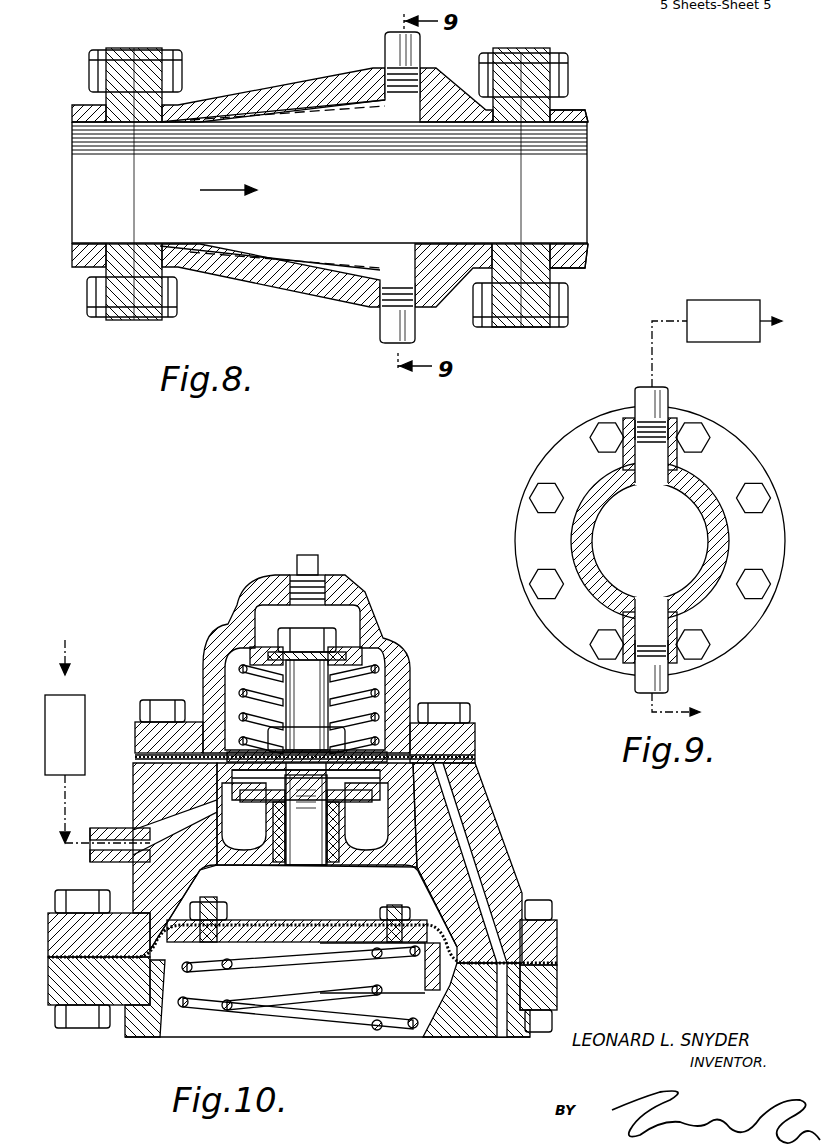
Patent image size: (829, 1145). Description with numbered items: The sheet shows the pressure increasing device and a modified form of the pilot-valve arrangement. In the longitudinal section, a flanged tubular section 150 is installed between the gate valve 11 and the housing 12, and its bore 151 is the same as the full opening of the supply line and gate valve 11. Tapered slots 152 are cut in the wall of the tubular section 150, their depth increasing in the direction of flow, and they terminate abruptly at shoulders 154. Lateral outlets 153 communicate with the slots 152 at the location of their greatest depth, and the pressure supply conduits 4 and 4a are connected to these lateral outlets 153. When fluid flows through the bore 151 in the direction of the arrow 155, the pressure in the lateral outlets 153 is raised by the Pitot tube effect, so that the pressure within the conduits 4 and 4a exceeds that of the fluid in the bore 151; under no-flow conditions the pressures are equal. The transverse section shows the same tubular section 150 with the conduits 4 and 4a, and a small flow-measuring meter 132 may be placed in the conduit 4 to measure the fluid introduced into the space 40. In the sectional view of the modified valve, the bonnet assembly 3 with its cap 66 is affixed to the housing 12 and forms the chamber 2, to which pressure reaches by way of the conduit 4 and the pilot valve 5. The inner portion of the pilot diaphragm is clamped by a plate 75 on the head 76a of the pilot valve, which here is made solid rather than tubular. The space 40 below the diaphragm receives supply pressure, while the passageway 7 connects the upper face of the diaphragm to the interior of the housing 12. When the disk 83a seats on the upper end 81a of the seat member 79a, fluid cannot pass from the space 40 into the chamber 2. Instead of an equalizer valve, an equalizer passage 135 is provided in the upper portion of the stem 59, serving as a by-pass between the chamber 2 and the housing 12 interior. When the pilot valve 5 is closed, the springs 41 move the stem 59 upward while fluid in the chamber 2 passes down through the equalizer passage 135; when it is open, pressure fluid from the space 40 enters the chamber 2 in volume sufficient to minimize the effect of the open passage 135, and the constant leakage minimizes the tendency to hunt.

In FIG. 10, the chamber 2 is at (420, 885).
In FIG. 10, the bonnet assembly 3 is at (500, 841).
In FIG. 8, the pressure supply conduit 4 is at (385, 49).
In FIG. 9, the pressure supply conduit 4 is at (652, 358).
In FIG. 10, the pressure supply conduit 4 is at (107, 828).
In FIG. 8, the pressure supply conduit 4a is at (380, 330).
In FIG. 9, the pressure supply conduit 4a is at (650, 684).
In FIG. 10, the pilot valve 5 is at (342, 790).
In FIG. 10, the passageway 7 is at (487, 900).
In FIG. 8, the gate valve 11 is at (78, 272).
In FIG. 8, the housing 12 is at (578, 108).
In FIG. 10, the housing 12 is at (565, 979).
In FIG. 10, the space 40 is at (281, 820).
In FIG. 10, the springs 41 is at (412, 1030).
In FIG. 10, the stem 59 is at (280, 1010).
In FIG. 10, the cap 66 is at (378, 612).
In FIG. 10, the plate 75 is at (470, 718).
In FIG. 10, the head 76a is at (292, 770).
In FIG. 10, the seat member 79a is at (330, 828).
In FIG. 10, the upper end 81a is at (330, 800).
In FIG. 10, the disk 83a is at (285, 800).
In FIG. 9, the small flow-measuring meter 132 is at (738, 301).
In FIG. 10, the small flow-measuring meter 132 is at (78, 697).
In FIG. 10, the equalizer passage 135 is at (305, 895).
In FIG. 8, the flanged tubular section 150 is at (258, 270).
In FIG. 9, the flanged tubular section 150 is at (517, 537).
In FIG. 8, the bore 151 is at (480, 125).
In FIG. 9, the bore 151 is at (784, 537).
In FIG. 8, the tapered slots 152 is at (322, 108).
In FIG. 9, the tapered slots 152 is at (662, 470).
In FIG. 8, the lateral outlets 153 is at (420, 85).
In FIG. 8, the shoulders 154 is at (388, 124).
In FIG. 8, the arrow 155 is at (216, 190).